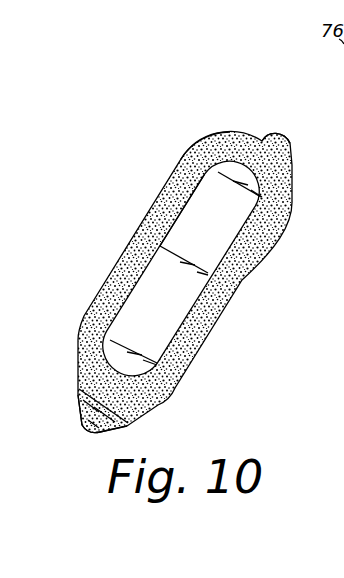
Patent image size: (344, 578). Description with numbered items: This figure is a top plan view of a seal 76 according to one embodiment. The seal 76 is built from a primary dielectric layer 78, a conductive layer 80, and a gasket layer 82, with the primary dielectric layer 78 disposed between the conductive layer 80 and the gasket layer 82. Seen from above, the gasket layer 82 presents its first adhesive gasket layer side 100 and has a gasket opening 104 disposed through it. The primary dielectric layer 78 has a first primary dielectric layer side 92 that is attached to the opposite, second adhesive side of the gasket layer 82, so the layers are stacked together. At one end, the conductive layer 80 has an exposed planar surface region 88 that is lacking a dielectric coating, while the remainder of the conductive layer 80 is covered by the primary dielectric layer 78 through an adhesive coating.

The seal 76 is at (152, 95).
The primary dielectric layer 78 is at (252, 181).
The conductive layer 80 is at (92, 407).
The gasket layer 82 is at (230, 132).
The exposed planar surface region 88 is at (87, 418).
The first primary dielectric layer side 92 is at (237, 211).
The first adhesive gasket layer side 100 is at (200, 160).
The gasket opening 104 is at (188, 212).